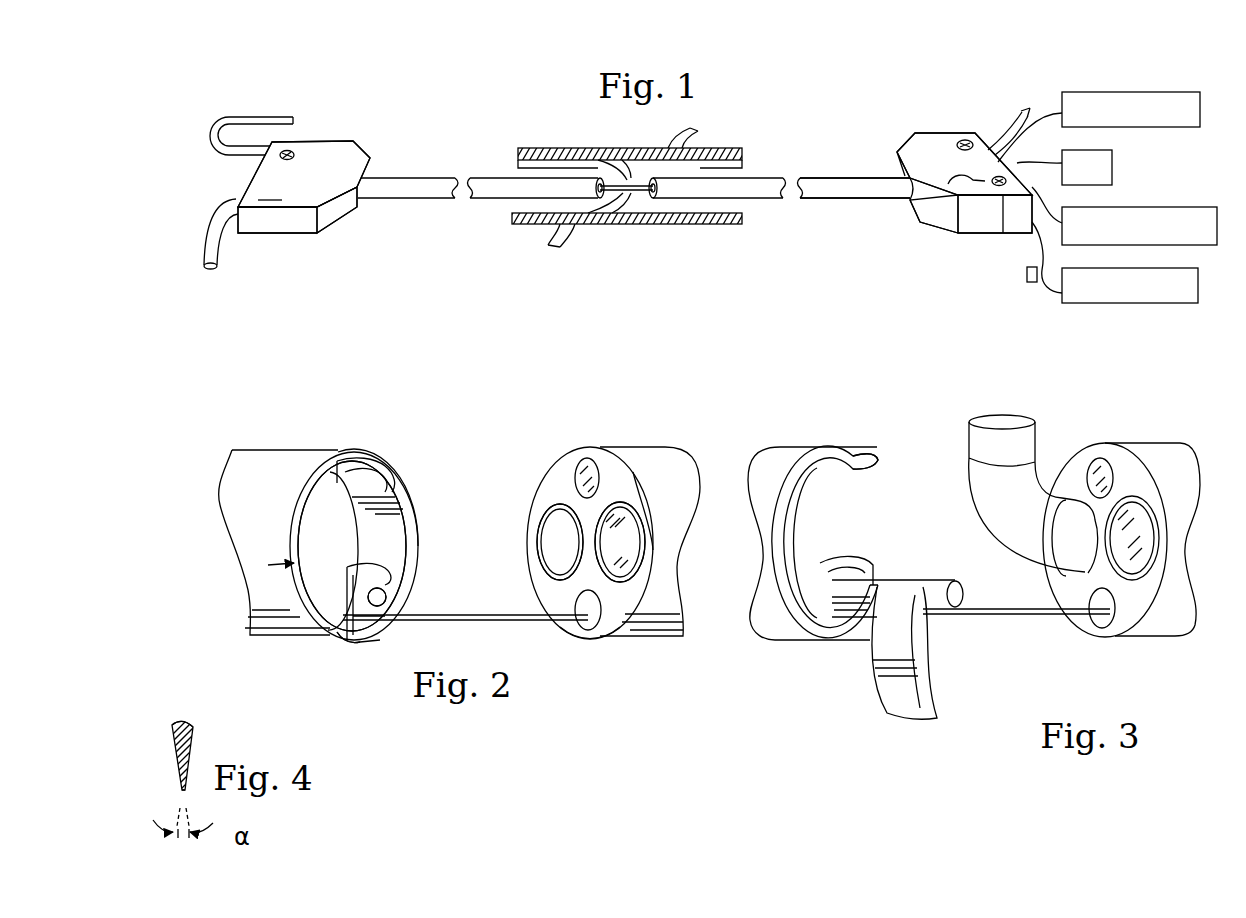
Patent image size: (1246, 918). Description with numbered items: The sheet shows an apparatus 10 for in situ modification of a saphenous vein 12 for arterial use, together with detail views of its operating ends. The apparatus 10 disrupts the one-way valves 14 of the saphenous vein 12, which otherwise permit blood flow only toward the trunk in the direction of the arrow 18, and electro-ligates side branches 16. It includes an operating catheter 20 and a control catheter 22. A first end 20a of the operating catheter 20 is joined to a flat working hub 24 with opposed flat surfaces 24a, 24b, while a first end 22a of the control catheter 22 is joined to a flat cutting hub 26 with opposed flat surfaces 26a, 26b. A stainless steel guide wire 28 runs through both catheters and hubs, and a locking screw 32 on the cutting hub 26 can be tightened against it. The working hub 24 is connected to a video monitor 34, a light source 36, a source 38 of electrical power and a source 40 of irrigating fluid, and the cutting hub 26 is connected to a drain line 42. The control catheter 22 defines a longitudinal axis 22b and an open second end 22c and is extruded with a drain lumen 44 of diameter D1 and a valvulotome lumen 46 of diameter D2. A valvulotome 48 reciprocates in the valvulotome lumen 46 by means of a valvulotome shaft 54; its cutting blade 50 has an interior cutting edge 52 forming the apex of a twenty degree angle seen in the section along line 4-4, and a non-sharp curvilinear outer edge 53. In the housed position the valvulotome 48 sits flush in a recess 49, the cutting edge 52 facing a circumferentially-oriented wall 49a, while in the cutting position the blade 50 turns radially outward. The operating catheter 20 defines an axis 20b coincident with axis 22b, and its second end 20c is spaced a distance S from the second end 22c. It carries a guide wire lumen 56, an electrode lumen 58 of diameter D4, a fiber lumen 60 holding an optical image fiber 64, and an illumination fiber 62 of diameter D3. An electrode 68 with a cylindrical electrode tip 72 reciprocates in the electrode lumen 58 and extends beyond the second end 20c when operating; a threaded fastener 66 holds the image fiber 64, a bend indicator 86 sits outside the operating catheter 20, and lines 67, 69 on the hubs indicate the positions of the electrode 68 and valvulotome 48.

In FIG. 1, the apparatus 10 is at (447, 150).
In FIG. 1, the saphenous vein 12 is at (580, 149).
In FIG. 1, the one-way valves 14 is at (626, 176).
In FIG. 1, the side branches 16 is at (678, 136).
In FIG. 1, the arrow 18 is at (694, 238).
In FIG. 1, the operating catheter 20 is at (766, 178).
In FIG. 2, the operating catheter 20 is at (651, 452).
In FIG. 1, the first end of operating catheter 20a is at (900, 170).
In FIG. 2, the longitudinal axis of operating catheter 20b is at (705, 539).
In FIG. 2, the second end of operating catheter 20c is at (582, 642).
In FIG. 1, the control catheter 22 is at (498, 200).
In FIG. 2, the control catheter 22 is at (242, 450).
In FIG. 3, the control catheter 22 is at (806, 641).
In FIG. 1, the first end of control catheter 22a is at (370, 180).
In FIG. 2, the longitudinal axis of control catheter 22b is at (232, 547).
In FIG. 2, the second end of control catheter 22c is at (353, 452).
In FIG. 1, the working hub 24 is at (930, 130).
In FIG. 1, the first flat surface of working hub 24a is at (917, 162).
In FIG. 1, the second flat surface of working hub 24b is at (950, 232).
In FIG. 1, the cutting hub 26 is at (345, 140).
In FIG. 1, the first flat surface of cutting hub 26a is at (305, 182).
In FIG. 1, the second flat surface of cutting hub 26b is at (320, 232).
In FIG. 1, the guide wire 28 is at (265, 115).
In FIG. 2, the guide wire 28 is at (455, 614).
In FIG. 3, the guide wire 28 is at (1046, 622).
In FIG. 1, the locking screw 32 is at (294, 152).
In FIG. 1, the video monitor 34 is at (1113, 166).
In FIG. 1, the light source 36 is at (1173, 128).
In FIG. 1, the source of electrical power 38 is at (1153, 305).
In FIG. 1, the source of irrigating fluid 40 is at (1172, 207).
In FIG. 1, the drain line 42 is at (220, 250).
In FIG. 2, the drain lumen 44 is at (317, 505).
In FIG. 2, the valvulotome lumen 46 is at (383, 578).
In FIG. 2, the valvulotome 48 is at (353, 602).
In FIG. 3, the valvulotome 48 is at (920, 582).
In FIG. 3, the recess 49 is at (878, 532).
In FIG. 3, the circumferentially-oriented wall 49a is at (847, 490).
In FIG. 2, the cutting blade 50 is at (393, 478).
In FIG. 3, the cutting blade 50 is at (901, 714).
In FIG. 4, the cutting blade 50 is at (180, 765).
In FIG. 2, the cutting edge 52 is at (324, 474).
In FIG. 4, the cutting edge 52 is at (182, 791).
In FIG. 2, the outer edge 53 is at (290, 548).
In FIG. 4, the outer edge 53 is at (172, 724).
In FIG. 2, the valvulotome shaft 54 is at (337, 638).
In FIG. 2, the guide wire lumen 56 is at (588, 612).
In FIG. 2, the electrode lumen 58 is at (542, 512).
In FIG. 2, the fiber lumen 60 is at (616, 502).
In FIG. 2, the illumination fiber 62 is at (592, 460).
In FIG. 2, the optical image fiber 64 is at (610, 554).
In FIG. 1, the threaded fastener 66 is at (1001, 187).
In FIG. 1, the indicator line 67 is at (923, 220).
In FIG. 2, the electrode 68 is at (550, 554).
In FIG. 3, the electrode 68 is at (1020, 550).
In FIG. 1, the indicator line 69 is at (278, 203).
In FIG. 3, the electrode tip 72 is at (968, 449).
In FIG. 1, the bend indicator 86 is at (1027, 276).
In FIG. 3, the section line 4- 4 is at (867, 690).
In FIG. 2, the diameter of drain lumen D1 is at (417, 523).
In FIG. 2, the diameter of valvulotome lumen D2 is at (353, 629).
In FIG. 2, the diameter of illumination fiber D3 is at (585, 494).
In FIG. 2, the diameter of electrode lumen D4 is at (558, 605).
In FIG. 2, the spacing distance S is at (422, 542).